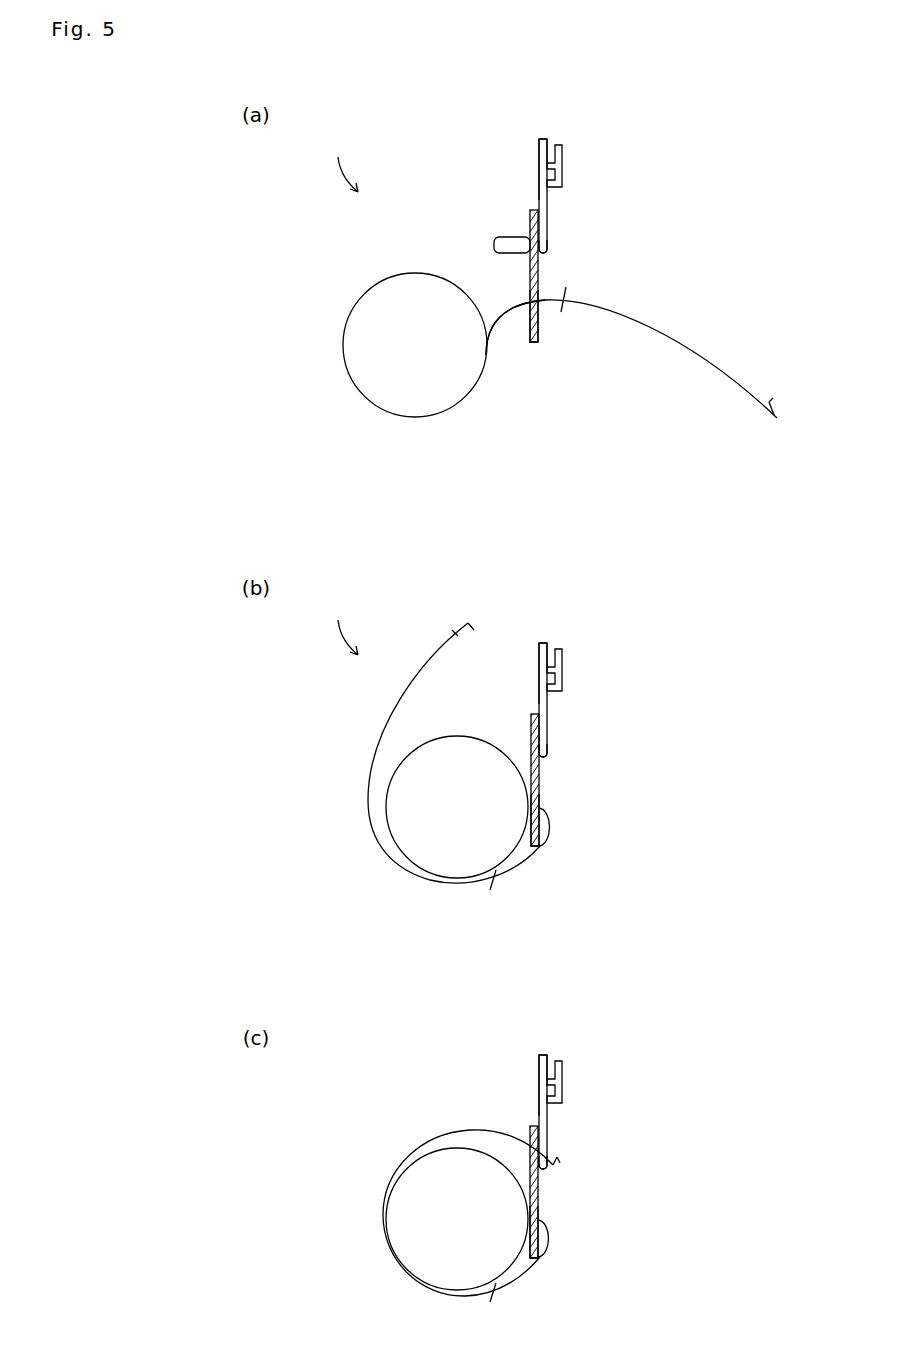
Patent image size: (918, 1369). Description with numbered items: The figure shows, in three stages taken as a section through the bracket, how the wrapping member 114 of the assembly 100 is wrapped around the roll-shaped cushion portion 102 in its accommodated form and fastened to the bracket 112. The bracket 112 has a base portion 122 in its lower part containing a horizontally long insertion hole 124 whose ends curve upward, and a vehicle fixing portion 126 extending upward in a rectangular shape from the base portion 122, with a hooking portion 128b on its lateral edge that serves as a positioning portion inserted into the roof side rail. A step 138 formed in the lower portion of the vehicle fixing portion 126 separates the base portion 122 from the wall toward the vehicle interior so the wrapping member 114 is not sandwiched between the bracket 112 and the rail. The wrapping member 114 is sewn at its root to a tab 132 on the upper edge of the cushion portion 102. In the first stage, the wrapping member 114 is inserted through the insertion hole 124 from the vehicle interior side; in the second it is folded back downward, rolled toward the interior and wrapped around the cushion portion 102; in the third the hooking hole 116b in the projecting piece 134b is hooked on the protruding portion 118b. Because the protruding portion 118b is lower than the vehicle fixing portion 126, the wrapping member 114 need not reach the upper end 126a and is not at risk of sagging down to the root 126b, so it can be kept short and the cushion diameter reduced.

The sheet conveying apparatus 100 is at (318, 151).
The cushion portion 102 is at (380, 412).
The bracket 112 is at (548, 204).
The wrapping member 114 is at (724, 372).
The hooking hole 116b is at (776, 408).
The protruding portion 118b is at (530, 212).
The base portion 122 is at (532, 343).
The insertion hole 124 is at (542, 303).
The vehicle fixing portion 126 is at (538, 158).
The upper end of vehicle fixing portion 126a is at (538, 139).
The root of vehicle fixing portion 126b is at (546, 254).
The hooking portion 128b is at (562, 160).
The tab 132 is at (498, 323).
The projecting piece 134b is at (774, 422).
The step 138 is at (493, 245).